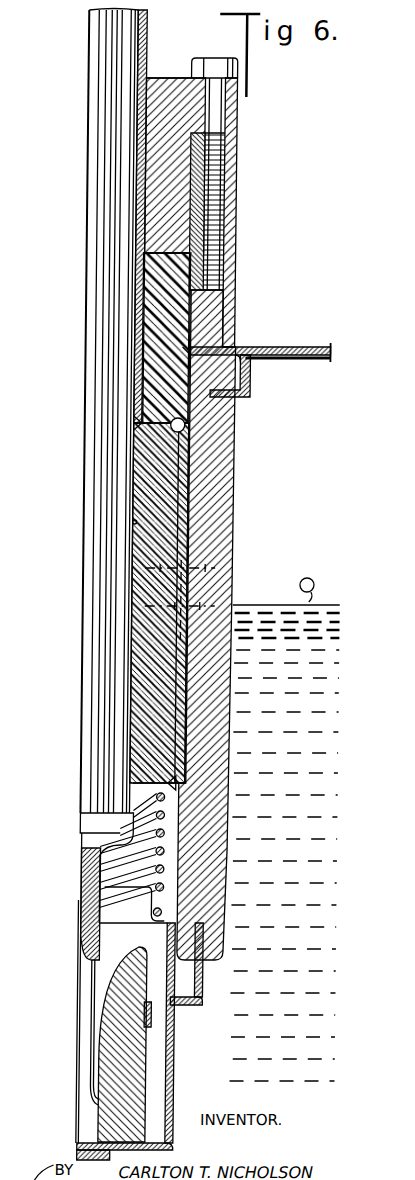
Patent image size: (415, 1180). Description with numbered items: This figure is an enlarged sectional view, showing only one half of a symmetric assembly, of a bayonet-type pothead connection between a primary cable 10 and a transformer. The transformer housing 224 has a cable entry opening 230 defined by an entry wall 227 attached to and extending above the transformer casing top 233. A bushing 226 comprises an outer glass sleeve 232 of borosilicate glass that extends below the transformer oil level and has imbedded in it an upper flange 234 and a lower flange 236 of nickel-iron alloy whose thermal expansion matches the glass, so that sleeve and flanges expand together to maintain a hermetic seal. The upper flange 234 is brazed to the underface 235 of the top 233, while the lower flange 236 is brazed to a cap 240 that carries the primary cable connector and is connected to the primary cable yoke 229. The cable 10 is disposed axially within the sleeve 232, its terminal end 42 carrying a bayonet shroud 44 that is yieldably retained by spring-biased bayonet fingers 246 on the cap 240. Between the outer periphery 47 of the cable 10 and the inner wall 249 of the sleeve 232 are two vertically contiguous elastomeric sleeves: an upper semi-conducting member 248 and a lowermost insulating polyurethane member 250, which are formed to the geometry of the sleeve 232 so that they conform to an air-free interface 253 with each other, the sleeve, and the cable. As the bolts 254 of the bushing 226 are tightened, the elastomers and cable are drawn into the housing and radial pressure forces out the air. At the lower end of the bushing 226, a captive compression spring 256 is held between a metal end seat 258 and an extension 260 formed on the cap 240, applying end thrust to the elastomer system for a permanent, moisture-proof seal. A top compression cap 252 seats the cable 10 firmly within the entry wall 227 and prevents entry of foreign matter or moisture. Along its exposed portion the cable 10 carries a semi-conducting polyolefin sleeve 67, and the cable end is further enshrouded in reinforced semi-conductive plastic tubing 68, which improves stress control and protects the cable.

The cable 10 is at (86, 28).
The reinforced plastic tubing 68 is at (145, 41).
The semi-conducting sleeve 67 is at (150, 75).
The top compression cap 252 is at (176, 88).
The bolts 254 is at (235, 112).
The entry wall 227 is at (235, 231).
The cable entry opening 230 is at (183, 348).
The transformer housing 224 is at (300, 347).
The transformer casing top 233 is at (329, 345).
The upper flange 234 is at (252, 381).
The underface 235 is at (313, 362).
The upper elastomeric sleeve 248 is at (142, 336).
The air-free interface 253 is at (134, 418).
The inner wall 249 is at (187, 421).
The bushing 226 is at (241, 500).
The outer periphery 47 is at (134, 522).
The outer glass sleeve 232 is at (215, 543).
The lowermost elastomeric sleeve 250 is at (165, 688).
The end seat 258 is at (184, 781).
The compression spring 256 is at (169, 837).
The extension 260 is at (177, 915).
The terminal end 42 is at (75, 899).
The bayonet shroud 44 is at (96, 992).
The lower flange 236 is at (210, 988).
The bayonet fingers 246 is at (140, 1053).
The cap 240 is at (181, 1072).
The primary cable yoke 229 is at (85, 1150).